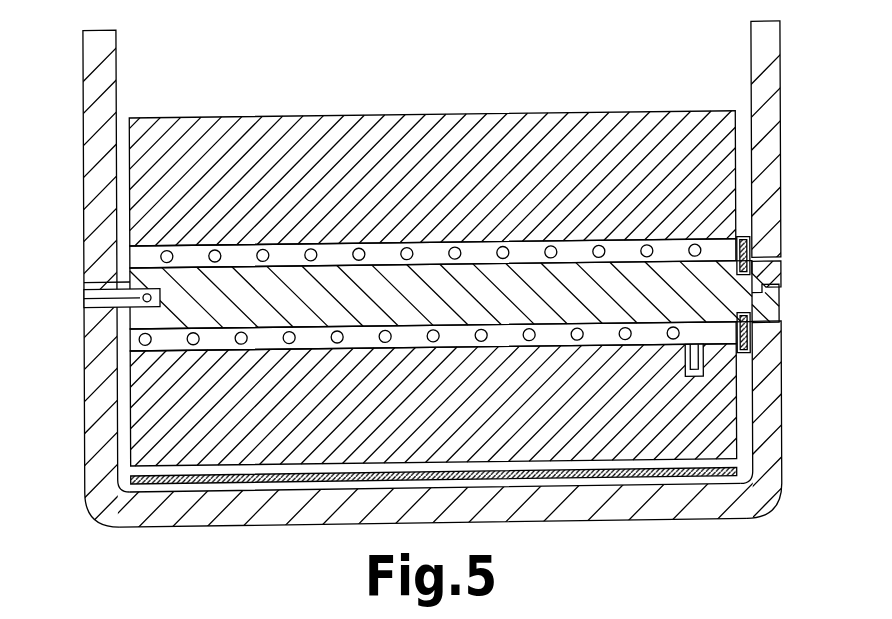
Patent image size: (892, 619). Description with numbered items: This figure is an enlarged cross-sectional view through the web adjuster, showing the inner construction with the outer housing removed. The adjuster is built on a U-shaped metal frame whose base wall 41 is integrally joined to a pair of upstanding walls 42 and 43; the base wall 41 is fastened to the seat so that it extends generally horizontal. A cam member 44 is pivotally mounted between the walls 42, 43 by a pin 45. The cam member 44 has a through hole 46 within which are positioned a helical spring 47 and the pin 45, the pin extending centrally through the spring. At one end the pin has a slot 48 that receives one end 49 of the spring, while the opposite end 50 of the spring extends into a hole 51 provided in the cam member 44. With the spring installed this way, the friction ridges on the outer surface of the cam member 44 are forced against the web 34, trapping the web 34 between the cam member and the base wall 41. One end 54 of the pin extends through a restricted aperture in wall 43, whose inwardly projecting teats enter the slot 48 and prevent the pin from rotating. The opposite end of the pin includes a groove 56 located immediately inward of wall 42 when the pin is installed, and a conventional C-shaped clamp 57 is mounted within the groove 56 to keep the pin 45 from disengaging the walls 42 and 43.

The web 34 is at (718, 478).
The base wall 41 is at (655, 508).
The upstanding wall 42 is at (770, 468).
The upstanding wall 43 is at (95, 394).
The cam member 44 is at (614, 114).
The pin 45 is at (523, 270).
The through hole 46 is at (474, 257).
The helical spring 47 is at (697, 252).
The slot 48 is at (86, 345).
The end of the spring 49 is at (90, 291).
The opposite end of the spring 50 is at (695, 368).
The hole 51 is at (712, 380).
The end of the pin 54 is at (93, 283).
The groove 56 is at (763, 281).
The C-shaped clamp 57 is at (752, 238).